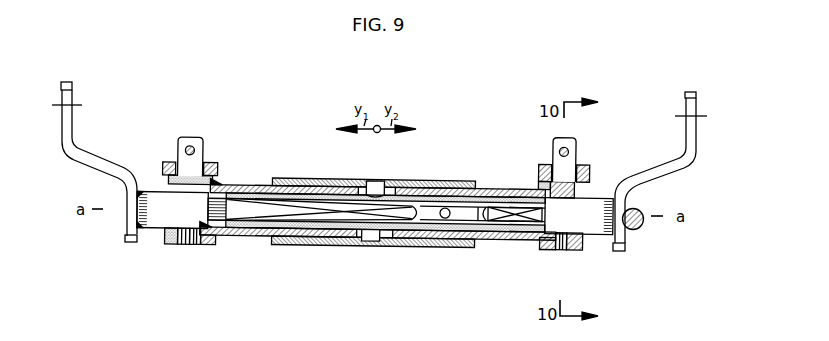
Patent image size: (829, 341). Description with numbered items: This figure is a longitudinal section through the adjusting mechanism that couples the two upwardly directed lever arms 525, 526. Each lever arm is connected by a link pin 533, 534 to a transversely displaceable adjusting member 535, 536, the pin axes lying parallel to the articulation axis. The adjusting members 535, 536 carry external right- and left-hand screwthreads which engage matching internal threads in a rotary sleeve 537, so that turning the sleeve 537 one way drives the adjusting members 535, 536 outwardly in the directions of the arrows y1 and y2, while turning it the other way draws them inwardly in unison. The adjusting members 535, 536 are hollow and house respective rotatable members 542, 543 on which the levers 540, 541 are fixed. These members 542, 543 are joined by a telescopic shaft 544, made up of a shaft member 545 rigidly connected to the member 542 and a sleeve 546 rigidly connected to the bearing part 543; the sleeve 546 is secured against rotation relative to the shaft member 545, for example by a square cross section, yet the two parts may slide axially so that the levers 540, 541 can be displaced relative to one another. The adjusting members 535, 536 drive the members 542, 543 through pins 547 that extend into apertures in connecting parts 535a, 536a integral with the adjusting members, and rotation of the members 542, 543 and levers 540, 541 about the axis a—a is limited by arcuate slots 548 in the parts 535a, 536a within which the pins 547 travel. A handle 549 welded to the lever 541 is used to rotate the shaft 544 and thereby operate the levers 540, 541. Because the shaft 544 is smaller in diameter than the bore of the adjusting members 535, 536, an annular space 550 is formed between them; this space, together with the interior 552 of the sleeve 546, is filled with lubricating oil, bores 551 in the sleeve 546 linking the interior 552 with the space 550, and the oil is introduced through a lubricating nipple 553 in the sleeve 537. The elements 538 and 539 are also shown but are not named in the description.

The lever arm 525 is at (219, 168).
The lever arm 526 is at (540, 173).
The link pin 533 is at (192, 158).
The link pin 534 is at (557, 161).
The adjusting member 535 is at (229, 246).
The connecting part 535a is at (170, 246).
The adjusting member 536 is at (506, 240).
The connecting part 536a is at (581, 249).
The rotary sleeve 537 is at (362, 247).
The upper sleeve 538 is at (330, 247).
The lower lining 539 is at (426, 241).
The lever 540 is at (70, 128).
The lever 541 is at (690, 138).
The rotatable member 542 is at (153, 200).
The rotatable member 543 is at (598, 206).
The telescopic shaft 544 is at (384, 232).
The shaft member 545 is at (262, 208).
The sleeve 546 is at (296, 222).
The pin 547 is at (197, 247).
The arcuate slot 548 is at (183, 247).
The handle 549 is at (639, 228).
The annular space 550 is at (412, 190).
The bore 551 is at (449, 206).
The interior of the sleeve 552 is at (458, 214).
The lubricating nipple 553 is at (371, 181).